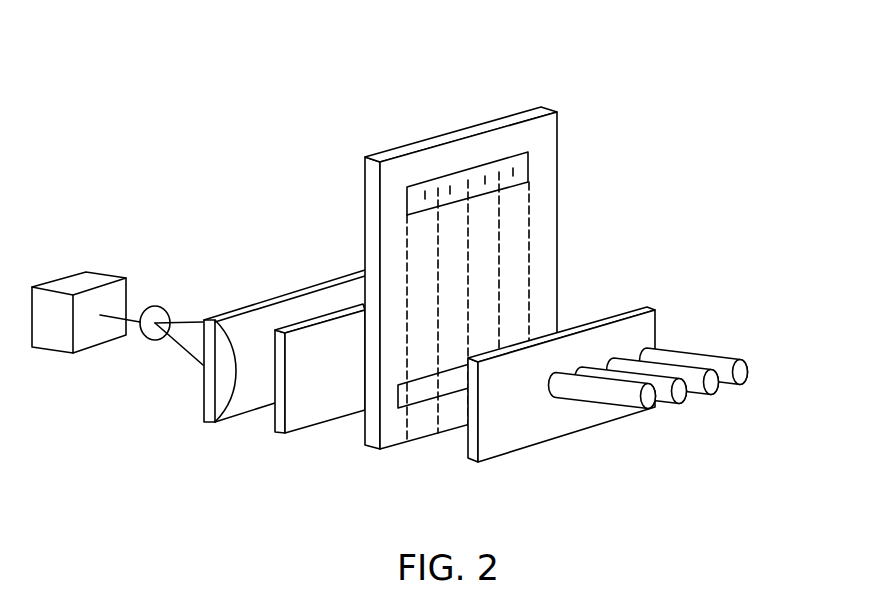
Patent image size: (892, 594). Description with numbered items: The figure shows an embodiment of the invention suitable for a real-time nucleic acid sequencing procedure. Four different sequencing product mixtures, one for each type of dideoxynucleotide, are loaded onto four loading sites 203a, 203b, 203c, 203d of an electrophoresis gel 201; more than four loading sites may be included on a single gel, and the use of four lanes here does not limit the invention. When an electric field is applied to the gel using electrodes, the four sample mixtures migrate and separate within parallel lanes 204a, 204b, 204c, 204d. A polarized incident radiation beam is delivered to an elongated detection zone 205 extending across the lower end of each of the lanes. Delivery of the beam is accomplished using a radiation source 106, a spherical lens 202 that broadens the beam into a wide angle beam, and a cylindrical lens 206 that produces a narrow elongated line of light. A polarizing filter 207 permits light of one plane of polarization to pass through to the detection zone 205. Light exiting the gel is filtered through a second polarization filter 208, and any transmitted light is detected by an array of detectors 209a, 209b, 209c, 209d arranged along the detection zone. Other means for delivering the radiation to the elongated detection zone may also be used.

The radiation source 106 is at (80, 280).
The spherical lens 202 is at (160, 307).
The cylindrical lens 206 is at (303, 292).
The polarizing filter 207 is at (303, 429).
The electrophoresis gel 201 is at (543, 107).
The loading site 203a is at (425, 197).
The loading site 203b is at (450, 193).
The loading site 203c is at (485, 183).
The loading site 203d is at (513, 175).
The lane 204a is at (417, 235).
The lane 204b is at (452, 227).
The lane 204c is at (488, 240).
The lane 204d is at (518, 253).
The elongated detection zone 205 is at (420, 395).
The second polarization filter 208 is at (513, 450).
The detector 209a is at (653, 407).
The detector 209b is at (683, 400).
The detector 209c is at (715, 390).
The detector 209d is at (747, 375).